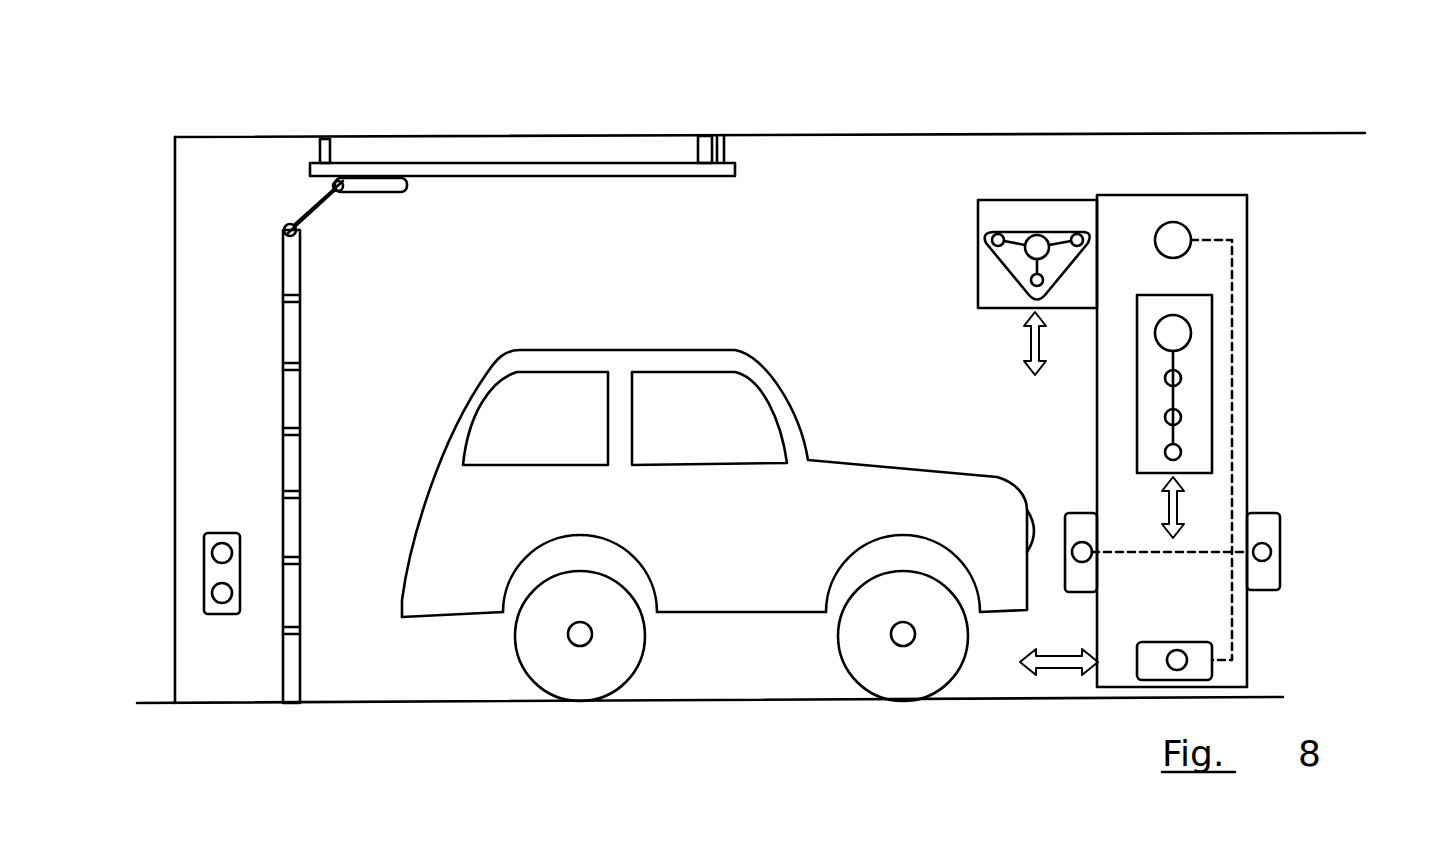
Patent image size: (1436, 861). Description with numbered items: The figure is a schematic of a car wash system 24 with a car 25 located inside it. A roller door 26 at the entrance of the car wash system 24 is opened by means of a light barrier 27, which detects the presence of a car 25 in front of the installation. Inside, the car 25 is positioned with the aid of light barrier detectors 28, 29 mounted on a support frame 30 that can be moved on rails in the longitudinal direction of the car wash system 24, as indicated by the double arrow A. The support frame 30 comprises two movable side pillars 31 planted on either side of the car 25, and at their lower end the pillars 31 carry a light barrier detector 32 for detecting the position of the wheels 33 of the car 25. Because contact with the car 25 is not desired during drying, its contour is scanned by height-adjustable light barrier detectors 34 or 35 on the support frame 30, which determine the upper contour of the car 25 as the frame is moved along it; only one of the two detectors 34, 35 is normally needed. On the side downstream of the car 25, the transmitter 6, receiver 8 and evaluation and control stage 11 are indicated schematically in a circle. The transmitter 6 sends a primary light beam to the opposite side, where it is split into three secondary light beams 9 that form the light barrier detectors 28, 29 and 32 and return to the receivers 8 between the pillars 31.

The car wash system 24 is at (933, 110).
The car 25 is at (726, 342).
The roller door 26 is at (283, 337).
The light barrier 27 is at (222, 612).
The light barrier detector 28 is at (1273, 540).
The light barrier detector 29 is at (1070, 545).
The support frame 30 is at (1248, 214).
The side pillar 31 is at (1237, 453).
The light barrier detector 32 is at (1210, 672).
The wheel 33 is at (620, 642).
The light barrier detector 34 is at (1020, 228).
The light barrier detector 35 is at (1212, 358).
The transmitter 6 is at (1145, 248).
The receiver 8 is at (1145, 248).
The evaluation and control stage 11 is at (1168, 222).
The secondary light beam 9 is at (1090, 557).
The double arrow A is at (1058, 672).